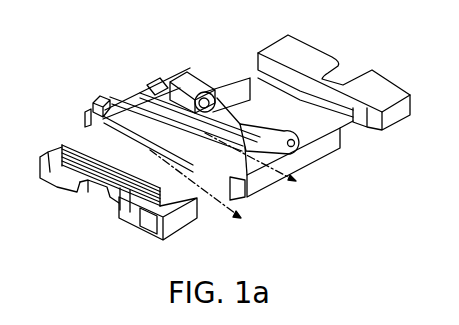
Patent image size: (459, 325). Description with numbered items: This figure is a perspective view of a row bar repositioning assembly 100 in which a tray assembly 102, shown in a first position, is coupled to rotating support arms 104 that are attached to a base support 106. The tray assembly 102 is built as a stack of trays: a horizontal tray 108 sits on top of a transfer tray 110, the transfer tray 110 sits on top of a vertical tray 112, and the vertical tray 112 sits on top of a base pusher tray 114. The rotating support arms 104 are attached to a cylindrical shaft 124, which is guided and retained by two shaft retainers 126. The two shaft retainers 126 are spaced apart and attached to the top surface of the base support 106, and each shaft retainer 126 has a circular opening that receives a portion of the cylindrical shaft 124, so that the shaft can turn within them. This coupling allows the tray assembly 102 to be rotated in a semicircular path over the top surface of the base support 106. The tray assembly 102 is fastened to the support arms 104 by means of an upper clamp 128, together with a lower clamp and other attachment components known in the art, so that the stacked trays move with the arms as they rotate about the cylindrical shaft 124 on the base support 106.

The row bar repositioning assembly 100 is at (151, 45).
The tray assembly 102 is at (58, 98).
The rotating support arms 104 is at (143, 97).
The base support 106 is at (310, 45).
The horizontal tray 108 is at (81, 141).
The transfer tray 110 is at (46, 166).
The vertical tray 112 is at (58, 188).
The base pusher tray 114 is at (80, 198).
The cylindrical shaft 124 is at (220, 100).
The shaft retainers 126 is at (191, 87).
The upper clamp 128 is at (129, 140).